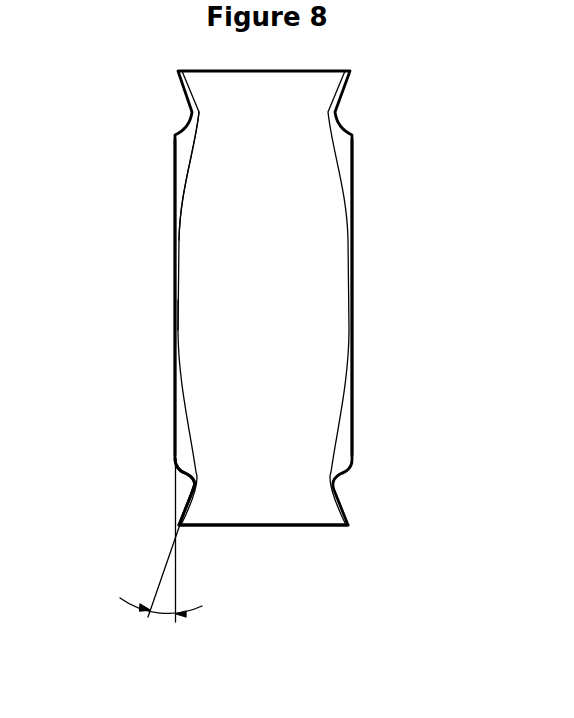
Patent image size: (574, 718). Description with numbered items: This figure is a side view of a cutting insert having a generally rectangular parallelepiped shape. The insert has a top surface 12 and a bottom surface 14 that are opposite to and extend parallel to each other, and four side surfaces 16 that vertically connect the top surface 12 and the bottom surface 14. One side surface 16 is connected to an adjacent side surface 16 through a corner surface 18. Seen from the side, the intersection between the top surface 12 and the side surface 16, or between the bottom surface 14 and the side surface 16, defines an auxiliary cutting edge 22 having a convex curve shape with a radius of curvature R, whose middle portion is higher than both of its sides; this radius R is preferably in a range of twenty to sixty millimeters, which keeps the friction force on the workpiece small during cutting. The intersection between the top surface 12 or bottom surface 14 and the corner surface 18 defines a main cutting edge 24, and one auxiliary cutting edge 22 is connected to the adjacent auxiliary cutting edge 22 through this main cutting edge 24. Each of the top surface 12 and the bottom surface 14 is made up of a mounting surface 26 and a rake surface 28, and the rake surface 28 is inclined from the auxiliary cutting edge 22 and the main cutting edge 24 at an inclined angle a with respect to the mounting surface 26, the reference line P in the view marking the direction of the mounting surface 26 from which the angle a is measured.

The top surface 12 is at (176, 310).
The bottom surface 14 is at (363, 302).
The side surface 16 is at (312, 253).
The corner surface 18 is at (287, 500).
The auxiliary cutting edge 22 is at (178, 232).
The main cutting edge 24 is at (195, 505).
The mounting surface 26 is at (174, 402).
The rake surface 28 is at (192, 493).
The radius of curvature R is at (181, 292).
The reference plane P is at (177, 580).
The inclined angle a is at (161, 620).